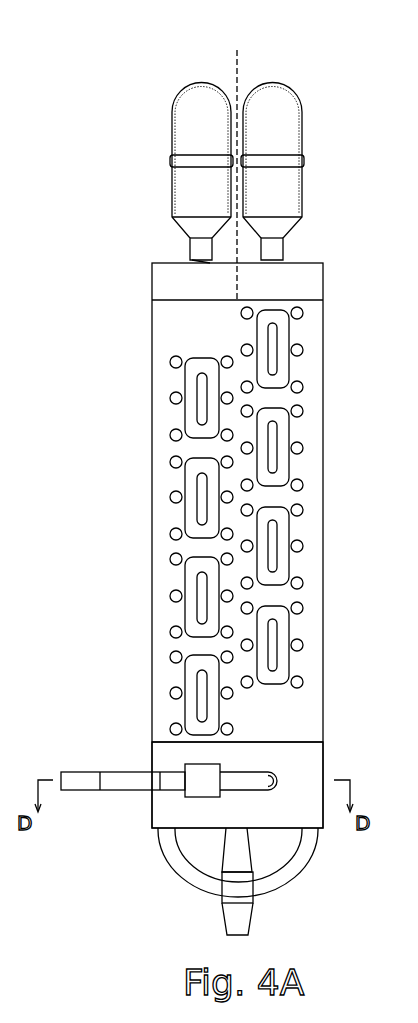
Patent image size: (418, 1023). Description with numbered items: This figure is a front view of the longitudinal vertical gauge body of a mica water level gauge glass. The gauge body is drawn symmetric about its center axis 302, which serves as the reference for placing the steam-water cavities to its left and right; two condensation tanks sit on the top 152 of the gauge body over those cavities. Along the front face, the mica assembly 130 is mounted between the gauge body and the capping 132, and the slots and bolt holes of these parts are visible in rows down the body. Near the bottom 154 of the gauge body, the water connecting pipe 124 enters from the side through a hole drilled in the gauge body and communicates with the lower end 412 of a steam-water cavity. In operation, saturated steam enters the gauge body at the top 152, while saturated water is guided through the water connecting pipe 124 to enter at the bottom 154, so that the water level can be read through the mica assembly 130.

The center axis 302 is at (240, 52).
The top of the gauge body 152 is at (172, 273).
The mica assembly 130 is at (283, 342).
The capping 132 is at (283, 438).
The water connecting pipe 124 is at (130, 780).
The bottom of the gauge body 154 is at (163, 800).
The lower end of the steam-water cavity 412 is at (287, 773).